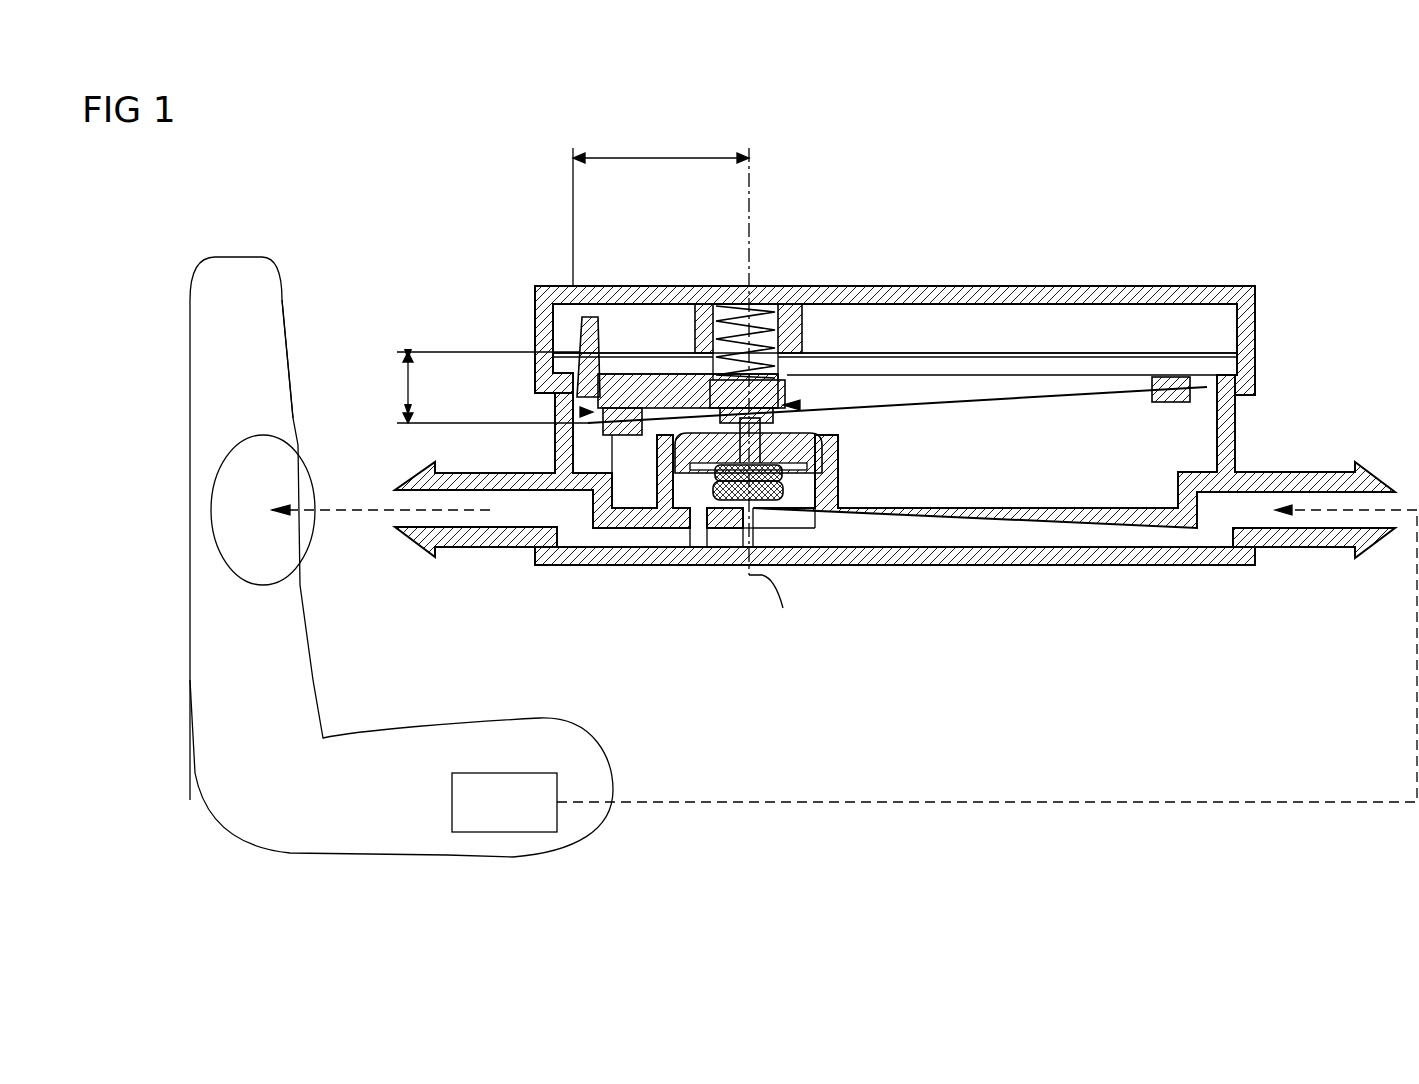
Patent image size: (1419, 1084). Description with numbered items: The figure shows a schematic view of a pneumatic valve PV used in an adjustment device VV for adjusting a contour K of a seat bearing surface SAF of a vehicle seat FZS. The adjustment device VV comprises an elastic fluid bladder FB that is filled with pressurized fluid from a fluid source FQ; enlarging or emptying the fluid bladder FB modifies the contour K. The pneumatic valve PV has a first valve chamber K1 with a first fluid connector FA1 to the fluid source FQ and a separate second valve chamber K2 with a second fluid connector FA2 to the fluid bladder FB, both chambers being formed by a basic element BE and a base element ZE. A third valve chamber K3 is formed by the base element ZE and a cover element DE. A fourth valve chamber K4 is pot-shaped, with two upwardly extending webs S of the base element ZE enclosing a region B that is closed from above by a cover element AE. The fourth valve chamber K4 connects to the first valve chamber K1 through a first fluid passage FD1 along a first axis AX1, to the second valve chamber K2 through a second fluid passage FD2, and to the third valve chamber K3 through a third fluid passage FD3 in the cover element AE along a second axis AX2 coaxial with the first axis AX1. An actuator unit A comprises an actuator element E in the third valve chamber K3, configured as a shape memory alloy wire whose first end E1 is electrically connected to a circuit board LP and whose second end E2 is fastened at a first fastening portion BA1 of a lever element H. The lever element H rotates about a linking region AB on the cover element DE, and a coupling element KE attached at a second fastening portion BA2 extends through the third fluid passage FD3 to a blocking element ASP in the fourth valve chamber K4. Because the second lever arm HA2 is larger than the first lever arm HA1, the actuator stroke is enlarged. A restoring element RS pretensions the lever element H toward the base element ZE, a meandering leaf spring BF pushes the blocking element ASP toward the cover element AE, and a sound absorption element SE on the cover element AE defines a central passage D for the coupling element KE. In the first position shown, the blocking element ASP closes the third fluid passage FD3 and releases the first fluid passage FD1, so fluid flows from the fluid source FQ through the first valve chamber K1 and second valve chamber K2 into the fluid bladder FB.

The vehicle seat FZS is at (190, 323).
The seat bearing surface SAF is at (284, 307).
The contour K is at (295, 440).
The fluid bladder FB is at (236, 572).
The adjustment device VV is at (183, 825).
The fluid source FQ is at (500, 820).
The pneumatic valve PV is at (878, 378).
The third valve chamber K3 is at (945, 430).
The first valve chamber K1 is at (978, 540).
The second valve chamber K2 is at (572, 528).
The fourth valve chamber K4 is at (745, 540).
The base element ZE is at (1030, 520).
The second fluid connector FA2 is at (485, 540).
The first fluid connector FA1 is at (1305, 542).
The restoring element RS is at (760, 300).
The lever element H is at (640, 304).
The blocking element ASP is at (685, 304).
The central passage D is at (713, 304).
The third fluid passage FD3 is at (835, 304).
The linking region AB is at (566, 346).
The actuator element E is at (983, 397).
The circuit board LP is at (1100, 367).
The cover element DE is at (1193, 382).
The first end E1 is at (1203, 380).
The first fastening portion BA1 is at (580, 412).
The second fastening portion BA2 is at (800, 405).
The second end E2 is at (600, 437).
The sound absorption element SE is at (752, 452).
The coupling element KE is at (775, 470).
The cover element AE is at (790, 490).
The webs S is at (660, 486).
The actuator unit A is at (1027, 415).
The first lever arm HA1 is at (476, 387).
The second lever arm HA2 is at (661, 206).
The second axis AX2 is at (751, 178).
The first axis AX1 is at (787, 608).
The second fluid passage FD2 is at (700, 545).
The first fluid passage FD1 is at (765, 535).
The leaf spring BF is at (700, 470).
The region B is at (815, 515).
The basic element BE is at (930, 545).